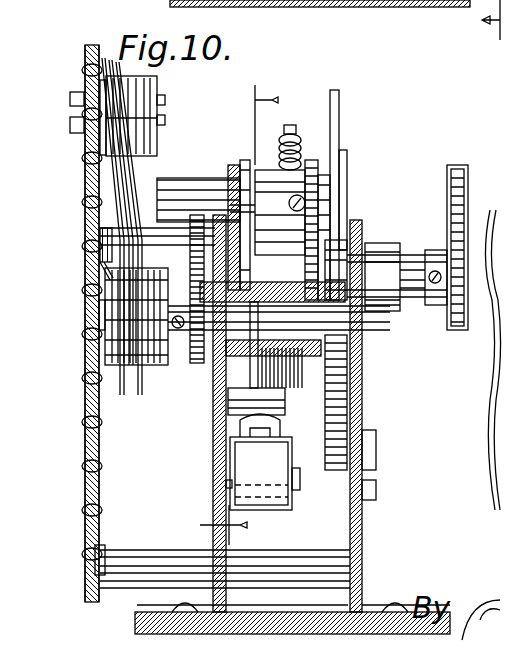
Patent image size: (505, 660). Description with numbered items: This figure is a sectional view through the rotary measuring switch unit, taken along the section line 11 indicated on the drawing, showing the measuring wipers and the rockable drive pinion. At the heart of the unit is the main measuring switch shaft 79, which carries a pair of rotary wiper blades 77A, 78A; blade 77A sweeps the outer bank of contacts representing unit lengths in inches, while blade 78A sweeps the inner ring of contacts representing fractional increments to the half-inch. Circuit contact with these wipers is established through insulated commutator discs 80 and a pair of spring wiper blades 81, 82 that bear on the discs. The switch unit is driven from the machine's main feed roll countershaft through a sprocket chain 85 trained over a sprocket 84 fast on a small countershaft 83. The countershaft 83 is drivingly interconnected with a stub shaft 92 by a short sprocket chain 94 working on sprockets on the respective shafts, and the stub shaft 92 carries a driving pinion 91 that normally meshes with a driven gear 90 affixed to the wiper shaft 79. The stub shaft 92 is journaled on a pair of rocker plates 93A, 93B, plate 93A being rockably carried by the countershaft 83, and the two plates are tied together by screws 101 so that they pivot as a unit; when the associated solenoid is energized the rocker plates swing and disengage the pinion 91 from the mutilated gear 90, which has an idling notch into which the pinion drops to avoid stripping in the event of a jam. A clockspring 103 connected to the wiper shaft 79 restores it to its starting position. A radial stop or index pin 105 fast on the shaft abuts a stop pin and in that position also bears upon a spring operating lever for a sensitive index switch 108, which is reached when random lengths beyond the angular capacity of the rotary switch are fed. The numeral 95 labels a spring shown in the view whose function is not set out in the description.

The rotary wiper blade 77A is at (115, 55).
The rotary wiper blade 78A is at (86, 167).
The spring wiper blade 81 is at (86, 266).
The spring wiper blade 82 is at (215, 182).
The driving pinion 91 is at (222, 165).
The rocker plate 93B is at (244, 165).
The section line 11 is at (224, 314).
The spring 95 is at (292, 135).
The rocker plate 93A is at (340, 152).
The stub shaft 92 is at (346, 178).
The sprocket chain 85 is at (455, 168).
The sprocket 84 is at (476, 215).
The screws 101 is at (200, 244).
The countershaft 83 is at (408, 262).
The short sprocket chain 94 is at (312, 256).
The main measuring switch shaft 79 is at (392, 322).
The clockspring 103 is at (346, 400).
The driven gear 90 is at (166, 382).
The insulated commutator discs 80 is at (133, 396).
The radial stop or index pin 105 is at (242, 378).
The sensitive index switch 108 is at (282, 482).